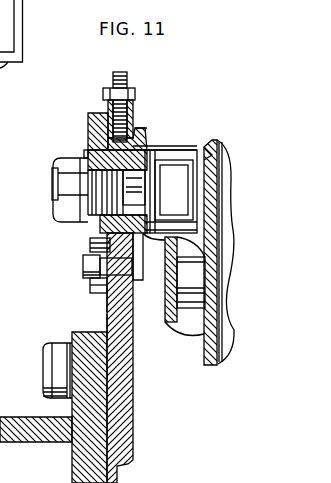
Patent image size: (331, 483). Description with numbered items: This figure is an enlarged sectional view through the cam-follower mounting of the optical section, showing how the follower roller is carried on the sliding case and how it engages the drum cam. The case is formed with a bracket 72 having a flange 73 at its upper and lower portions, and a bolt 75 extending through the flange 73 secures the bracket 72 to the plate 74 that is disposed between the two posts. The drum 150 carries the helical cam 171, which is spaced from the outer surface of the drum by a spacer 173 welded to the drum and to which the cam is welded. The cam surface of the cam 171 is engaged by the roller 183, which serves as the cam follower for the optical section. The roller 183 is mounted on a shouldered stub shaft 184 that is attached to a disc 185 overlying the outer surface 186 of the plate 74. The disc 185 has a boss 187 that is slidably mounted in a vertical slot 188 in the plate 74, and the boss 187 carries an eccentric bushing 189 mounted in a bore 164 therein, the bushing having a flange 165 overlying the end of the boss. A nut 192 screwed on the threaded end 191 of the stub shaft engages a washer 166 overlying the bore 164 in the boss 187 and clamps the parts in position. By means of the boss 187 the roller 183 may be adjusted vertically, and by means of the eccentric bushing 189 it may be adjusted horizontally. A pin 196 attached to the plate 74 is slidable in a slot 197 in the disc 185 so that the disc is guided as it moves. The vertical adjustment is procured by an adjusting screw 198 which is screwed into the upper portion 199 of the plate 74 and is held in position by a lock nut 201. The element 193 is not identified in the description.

The adjusting screw 198 is at (125, 72).
The lock nut 201 is at (135, 91).
The upper portion of plate 199 is at (108, 115).
The disc 185 is at (88, 118).
The boss 187 is at (96, 152).
The eccentric bushing 189 is at (137, 134).
The washer 166 is at (84, 153).
The nut 192 is at (70, 185).
The threaded end of shaft 191 is at (102, 190).
The bore 164 is at (100, 224).
The plate 74 is at (118, 428).
The flange 165 is at (108, 297).
The outer surface of plate 186 is at (107, 323).
The vertical slot 188 is at (110, 247).
The pin 196 is at (92, 268).
The slot 197 is at (93, 288).
The shouldered stub shaft 184 is at (165, 162).
The bearing race 193 is at (186, 148).
The roller 183 is at (157, 234).
The spacer 173 is at (192, 293).
The helical cam 171 is at (166, 312).
The drum 150 is at (210, 143).
The bolt 75 is at (55, 365).
The flange 73 is at (87, 395).
The bracket 72 is at (27, 417).